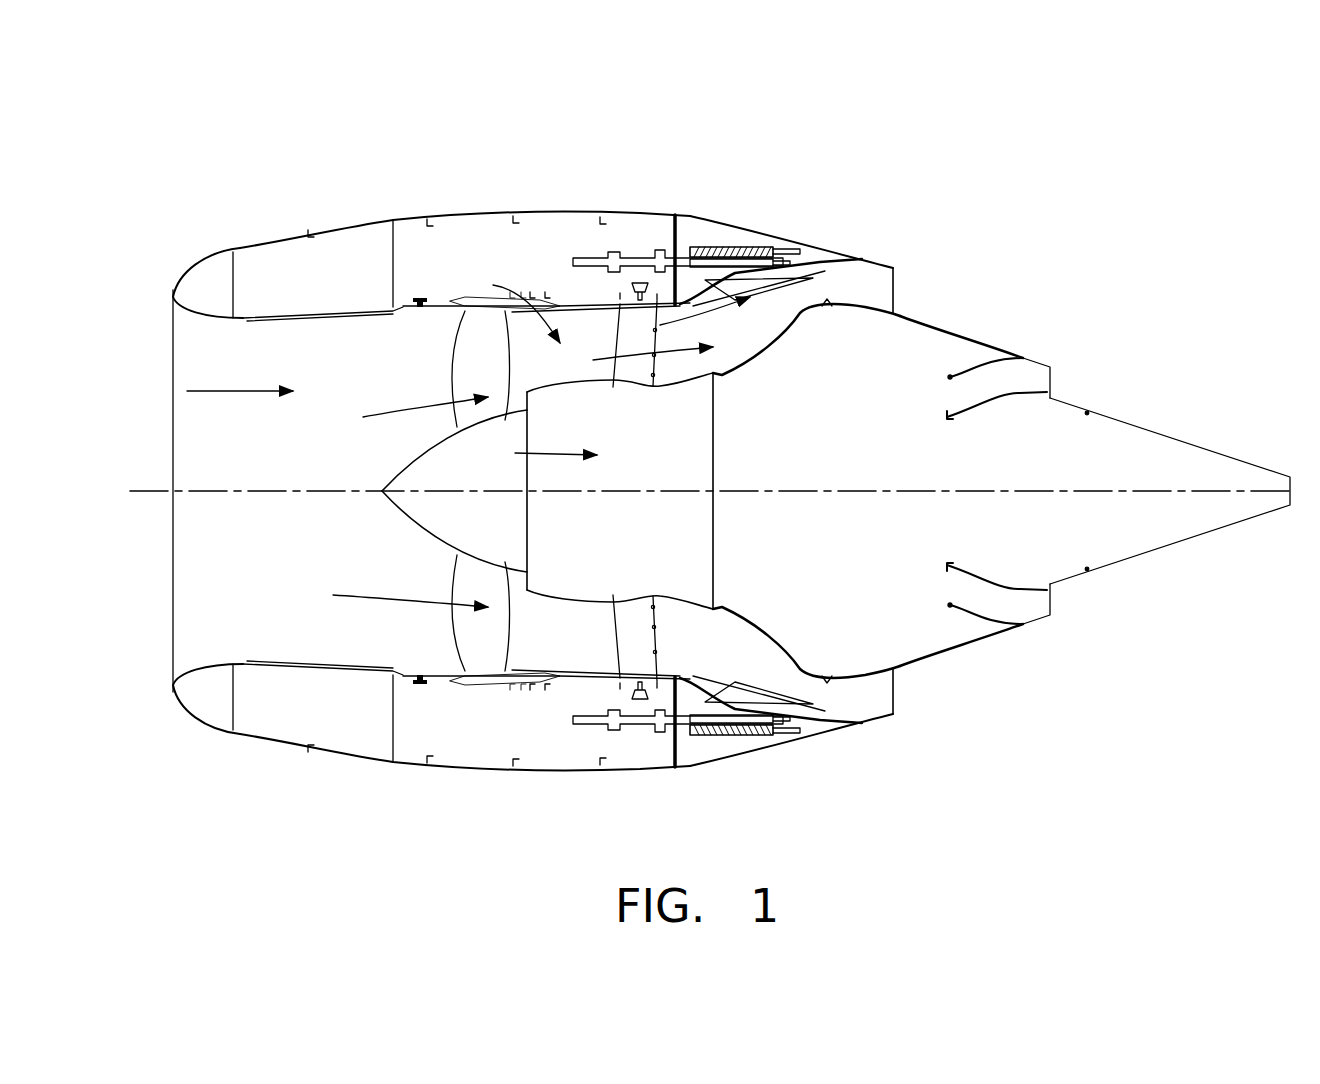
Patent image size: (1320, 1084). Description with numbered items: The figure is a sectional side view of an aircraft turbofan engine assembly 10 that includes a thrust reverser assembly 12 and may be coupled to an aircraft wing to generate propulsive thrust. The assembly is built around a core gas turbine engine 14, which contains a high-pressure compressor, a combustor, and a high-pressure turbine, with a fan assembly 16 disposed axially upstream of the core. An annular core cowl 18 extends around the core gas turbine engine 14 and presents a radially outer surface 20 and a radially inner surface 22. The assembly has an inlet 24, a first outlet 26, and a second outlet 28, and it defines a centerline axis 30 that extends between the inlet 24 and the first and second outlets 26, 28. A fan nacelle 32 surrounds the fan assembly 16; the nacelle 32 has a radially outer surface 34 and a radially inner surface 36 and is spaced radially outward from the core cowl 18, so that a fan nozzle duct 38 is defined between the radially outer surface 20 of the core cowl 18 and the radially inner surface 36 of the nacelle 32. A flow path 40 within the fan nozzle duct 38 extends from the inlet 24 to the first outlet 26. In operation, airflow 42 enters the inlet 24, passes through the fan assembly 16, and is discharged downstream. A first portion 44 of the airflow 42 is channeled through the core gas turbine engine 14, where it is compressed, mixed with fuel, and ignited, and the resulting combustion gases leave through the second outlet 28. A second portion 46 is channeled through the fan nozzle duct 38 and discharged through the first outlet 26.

The turbofan engine assembly 10 is at (1060, 172).
The thrust reverser assembly 12 is at (788, 210).
The core gas turbine engine 14 is at (1013, 330).
The fan assembly 16 is at (478, 345).
The annular core cowl 18 is at (923, 327).
The radially outer surface 20 is at (845, 303).
The radially inner surface 22 is at (783, 337).
The inlet 24 is at (233, 391).
The first outlet 26 is at (927, 292).
The second outlet 28 is at (1063, 385).
The centerline axis 30 is at (1037, 490).
The fan nacelle 32 is at (372, 172).
The radially outer surface 34 is at (583, 213).
The radially inner surface 36 is at (653, 325).
The fan nozzle duct 38 is at (505, 482).
The flow path 40 is at (667, 352).
The airflow 42 is at (423, 414).
The first portion of airflow 44 is at (535, 455).
The second portion of airflow 46 is at (717, 318).